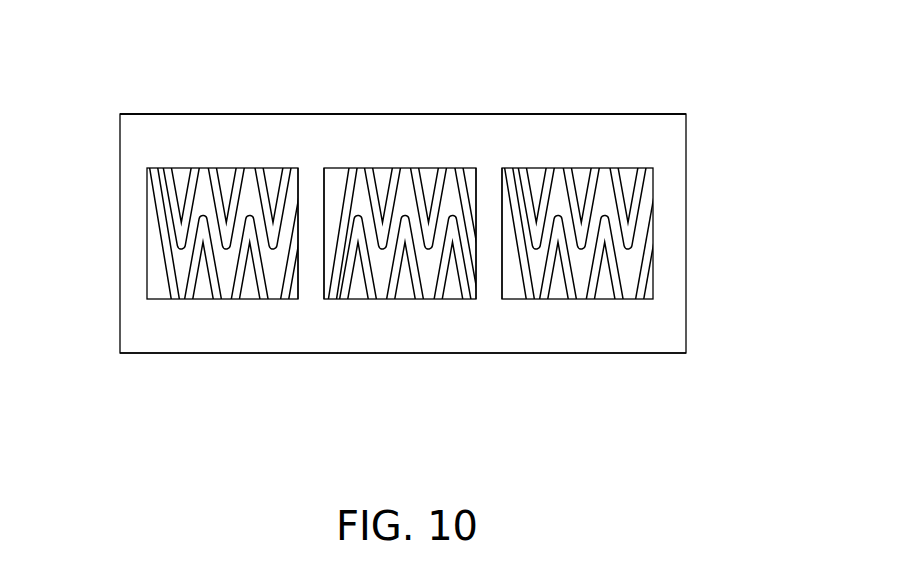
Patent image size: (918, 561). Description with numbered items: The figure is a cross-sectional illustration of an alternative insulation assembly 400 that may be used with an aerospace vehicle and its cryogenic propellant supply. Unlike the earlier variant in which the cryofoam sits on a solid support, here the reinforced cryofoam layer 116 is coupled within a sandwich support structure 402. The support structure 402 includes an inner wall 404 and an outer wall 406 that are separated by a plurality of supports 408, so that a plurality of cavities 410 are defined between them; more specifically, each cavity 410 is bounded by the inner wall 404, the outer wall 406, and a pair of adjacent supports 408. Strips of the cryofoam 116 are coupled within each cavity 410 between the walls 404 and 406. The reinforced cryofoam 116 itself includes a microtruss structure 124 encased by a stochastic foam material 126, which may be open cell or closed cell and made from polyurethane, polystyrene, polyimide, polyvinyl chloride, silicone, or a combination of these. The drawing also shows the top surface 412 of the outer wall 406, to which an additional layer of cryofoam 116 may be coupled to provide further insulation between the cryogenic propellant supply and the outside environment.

The insulation assembly 400 is at (98, 108).
The sandwich support structure 402 is at (700, 150).
The top surface 412 is at (490, 113).
The outer wall 406 is at (148, 144).
The inner wall 404 is at (145, 328).
The cavity 410 is at (225, 289).
The support 408 is at (308, 260).
The reinforced cryofoam layer 116 is at (698, 233).
The stochastic foam material 126 is at (709, 233).
The microtruss structure 124 is at (624, 283).